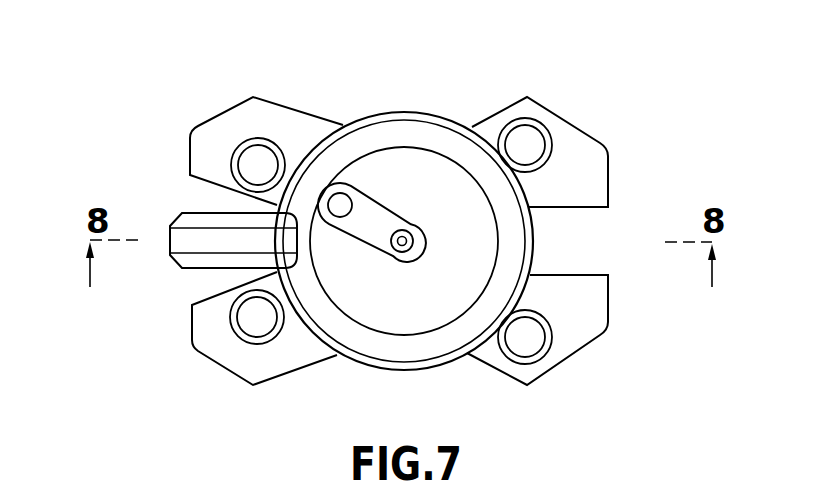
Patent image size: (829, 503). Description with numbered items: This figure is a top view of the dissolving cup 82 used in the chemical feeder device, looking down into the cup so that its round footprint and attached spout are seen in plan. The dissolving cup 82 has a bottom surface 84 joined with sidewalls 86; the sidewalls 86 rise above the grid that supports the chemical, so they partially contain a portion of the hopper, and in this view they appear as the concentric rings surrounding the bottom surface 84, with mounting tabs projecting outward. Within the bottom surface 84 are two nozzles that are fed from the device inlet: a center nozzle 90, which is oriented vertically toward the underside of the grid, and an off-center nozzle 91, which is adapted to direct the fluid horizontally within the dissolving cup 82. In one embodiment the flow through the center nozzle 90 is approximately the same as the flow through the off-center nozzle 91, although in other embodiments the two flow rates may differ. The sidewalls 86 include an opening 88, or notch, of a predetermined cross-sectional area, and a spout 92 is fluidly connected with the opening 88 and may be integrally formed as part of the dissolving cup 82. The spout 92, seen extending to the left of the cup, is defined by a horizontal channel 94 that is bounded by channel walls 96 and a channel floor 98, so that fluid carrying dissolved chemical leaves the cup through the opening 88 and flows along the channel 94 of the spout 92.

The dissolving cup 82 is at (314, 70).
The bottom surface 84 is at (485, 222).
The sidewalls 86 is at (425, 133).
The opening 88 is at (293, 238).
The center nozzle 90 is at (397, 259).
The off-center nozzle 91 is at (345, 201).
The spout 92 is at (200, 213).
The horizontal channel 94 is at (142, 191).
The channel walls 96 is at (203, 213).
The channel floor 98 is at (170, 246).